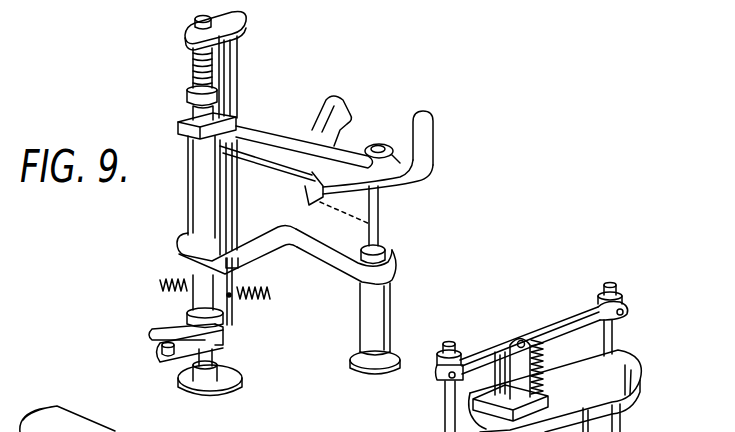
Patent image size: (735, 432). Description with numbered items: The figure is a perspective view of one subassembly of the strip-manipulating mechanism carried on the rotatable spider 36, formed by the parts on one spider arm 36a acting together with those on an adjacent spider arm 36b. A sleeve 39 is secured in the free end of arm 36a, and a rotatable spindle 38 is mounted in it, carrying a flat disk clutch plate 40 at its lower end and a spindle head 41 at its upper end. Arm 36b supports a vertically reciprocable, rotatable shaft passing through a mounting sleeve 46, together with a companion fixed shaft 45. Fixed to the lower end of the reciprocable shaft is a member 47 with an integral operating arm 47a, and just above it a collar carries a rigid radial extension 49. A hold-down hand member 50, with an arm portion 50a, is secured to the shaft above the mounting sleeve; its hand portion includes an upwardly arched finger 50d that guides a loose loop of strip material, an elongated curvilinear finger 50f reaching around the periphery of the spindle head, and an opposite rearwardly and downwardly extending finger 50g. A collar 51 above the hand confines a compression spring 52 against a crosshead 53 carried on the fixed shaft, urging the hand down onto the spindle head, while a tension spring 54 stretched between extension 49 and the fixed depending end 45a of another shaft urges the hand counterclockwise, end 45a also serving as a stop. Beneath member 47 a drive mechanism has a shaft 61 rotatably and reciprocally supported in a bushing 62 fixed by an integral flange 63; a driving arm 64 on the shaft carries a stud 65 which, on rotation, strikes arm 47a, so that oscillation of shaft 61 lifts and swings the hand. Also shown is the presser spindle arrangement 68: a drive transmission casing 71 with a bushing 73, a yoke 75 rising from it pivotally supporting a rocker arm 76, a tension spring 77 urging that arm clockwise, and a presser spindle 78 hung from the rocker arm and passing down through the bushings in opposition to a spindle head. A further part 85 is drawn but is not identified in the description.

The spider 36 is at (278, 226).
The spider arm 36a is at (262, 274).
The spider arm 36b is at (233, 262).
The spindle 38 is at (380, 211).
The sleeve 39 is at (390, 290).
The clutch plate 40 is at (352, 356).
The spindle head 41 is at (378, 142).
The fixed shaft 45 is at (238, 90).
The depending end 45a is at (233, 327).
The mounting sleeve 46 is at (188, 178).
The member 47 is at (225, 336).
The operating arm 47a is at (160, 331).
The rigid extension 49 is at (233, 312).
The hold-down hand member 50 is at (265, 171).
The arm portion 50a is at (250, 141).
The finger 50d is at (332, 104).
The elongated curvilinear finger 50f is at (434, 131).
The finger 50g is at (305, 188).
The collar 51 is at (188, 96).
The compression spring 52 is at (213, 65).
The crosshead 53 is at (236, 38).
The tension spring 54 is at (172, 290).
The shaft 61 is at (212, 357).
The bushing 62 is at (220, 375).
The flange 63 is at (222, 387).
The driving arm 64 is at (162, 357).
The stud 65 is at (162, 350).
The presser spindle arrangement 68 is at (531, 318).
The drive transmission casing 71 is at (649, 370).
The bushing 73 is at (622, 425).
The yoke 75 is at (512, 336).
The rocker arm 76 is at (467, 348).
The tension spring 77 is at (541, 350).
The presser spindle 78 is at (617, 327).
The bar 85 is at (118, 430).